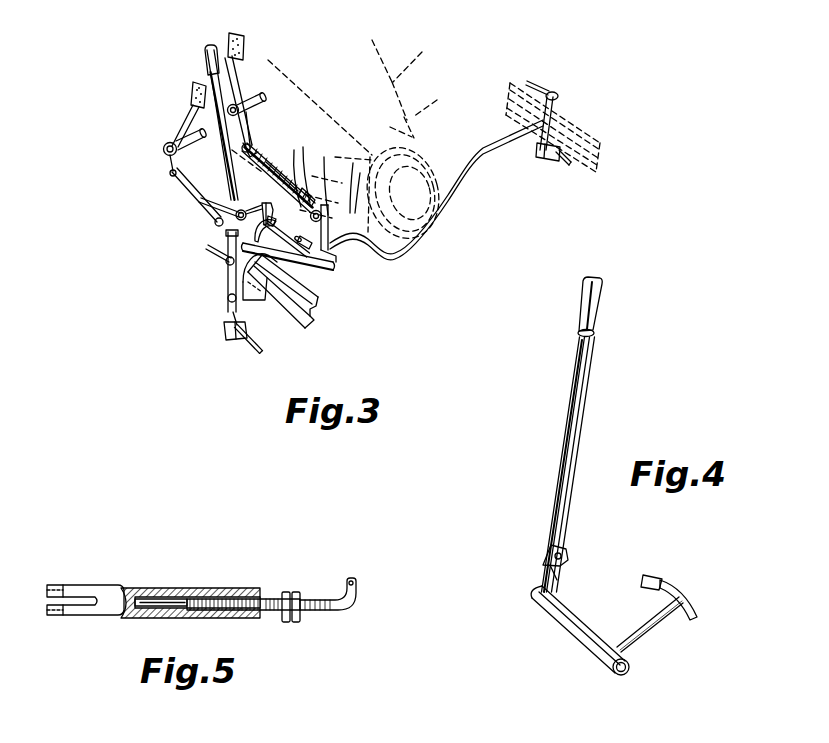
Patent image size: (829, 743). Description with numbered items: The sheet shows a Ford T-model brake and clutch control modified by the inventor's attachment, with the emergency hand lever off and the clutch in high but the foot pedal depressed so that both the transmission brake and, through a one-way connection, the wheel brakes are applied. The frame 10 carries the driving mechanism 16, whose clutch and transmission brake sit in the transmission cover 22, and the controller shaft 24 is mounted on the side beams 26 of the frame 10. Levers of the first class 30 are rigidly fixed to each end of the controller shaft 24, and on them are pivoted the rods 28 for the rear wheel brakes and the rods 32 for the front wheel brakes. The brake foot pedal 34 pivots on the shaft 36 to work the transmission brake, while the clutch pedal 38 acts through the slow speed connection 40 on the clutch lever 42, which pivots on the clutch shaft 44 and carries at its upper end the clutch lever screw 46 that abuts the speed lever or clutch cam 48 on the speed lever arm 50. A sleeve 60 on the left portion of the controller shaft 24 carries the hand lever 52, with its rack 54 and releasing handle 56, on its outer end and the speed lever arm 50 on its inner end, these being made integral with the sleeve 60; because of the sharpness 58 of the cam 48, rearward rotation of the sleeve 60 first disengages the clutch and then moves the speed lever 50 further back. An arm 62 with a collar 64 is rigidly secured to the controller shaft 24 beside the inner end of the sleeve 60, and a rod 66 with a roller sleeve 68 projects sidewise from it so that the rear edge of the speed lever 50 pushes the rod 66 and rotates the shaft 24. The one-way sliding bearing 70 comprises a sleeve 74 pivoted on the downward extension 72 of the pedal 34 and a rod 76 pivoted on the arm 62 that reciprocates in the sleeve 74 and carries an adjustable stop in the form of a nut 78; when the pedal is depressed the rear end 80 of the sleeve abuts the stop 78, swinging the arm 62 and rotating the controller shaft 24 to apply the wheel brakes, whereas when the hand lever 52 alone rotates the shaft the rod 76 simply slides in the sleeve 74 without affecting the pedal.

In FIG. 3, the frame 10 is at (317, 317).
In FIG. 3, the driving mechanism 16 is at (345, 153).
In FIG. 3, the transmission cover 22 is at (422, 60).
In FIG. 3, the controller shaft 24 is at (488, 160).
In FIG. 3, the side beams 26 is at (295, 310).
In FIG. 3, the rods for actuating the rear wheel brakes 28 is at (252, 355).
In FIG. 3, the levers of the first class 30 is at (233, 283).
In FIG. 3, the rods for actuating the front wheel brakes 32 is at (209, 252).
In FIG. 3, the brake foot pedal 34 is at (236, 78).
In FIG. 3, the shaft 36 is at (263, 97).
In FIG. 3, the clutch pedal 38 is at (192, 113).
In FIG. 3, the slow speed connection 40 is at (203, 213).
In FIG. 3, the clutch lever 42 is at (228, 226).
In FIG. 3, the clutch shaft 44 is at (236, 205).
In FIG. 3, the clutch lever screw 46 is at (272, 212).
In FIG. 3, the speed lever (clutch cam) 48 is at (257, 237).
In FIG. 4, the speed lever (clutch cam) 48 is at (690, 600).
In FIG. 3, the speed lever arm 50 is at (288, 238).
In FIG. 4, the speed lever arm 50 is at (653, 618).
In FIG. 3, the hand lever 52 is at (210, 63).
In FIG. 4, the hand lever 52 is at (582, 397).
In FIG. 3, the rack 54 is at (277, 271).
In FIG. 3, the releasing handle 56 is at (218, 42).
In FIG. 4, the releasing handle 56 is at (583, 298).
In FIG. 3, the sharpness of the crank cam 58 is at (272, 216).
In FIG. 4, the sharpness of the crank cam 58 is at (667, 578).
In FIG. 3, the sleeve 60 is at (310, 264).
In FIG. 4, the sleeve 60 is at (567, 628).
In FIG. 3, the arm 62 is at (370, 187).
In FIG. 3, the collar 64 is at (365, 195).
In FIG. 3, the rod 66 is at (320, 205).
In FIG. 3, the roller sleeve 68 is at (335, 205).
In FIG. 3, the sliding bearing 70 is at (268, 163).
In FIG. 5, the sliding bearing 70 is at (163, 587).
In FIG. 3, the downward extension 72 is at (247, 126).
In FIG. 5, the sleeve 74 is at (198, 590).
In FIG. 3, the rod 76 is at (320, 195).
In FIG. 5, the rod 76 is at (310, 600).
In FIG. 3, the adjustable stop (nut) 78 is at (306, 196).
In FIG. 5, the adjustable stop (nut) 78 is at (292, 590).
In FIG. 3, the rear end of sleeve 80 is at (283, 185).
In FIG. 5, the rear end of sleeve 80 is at (263, 592).